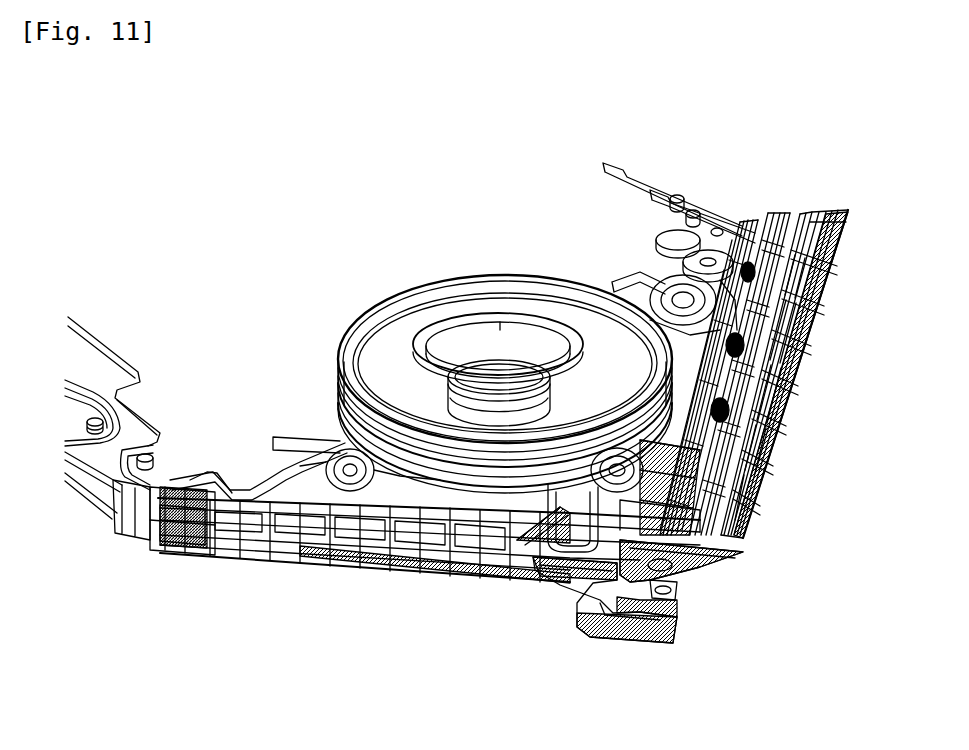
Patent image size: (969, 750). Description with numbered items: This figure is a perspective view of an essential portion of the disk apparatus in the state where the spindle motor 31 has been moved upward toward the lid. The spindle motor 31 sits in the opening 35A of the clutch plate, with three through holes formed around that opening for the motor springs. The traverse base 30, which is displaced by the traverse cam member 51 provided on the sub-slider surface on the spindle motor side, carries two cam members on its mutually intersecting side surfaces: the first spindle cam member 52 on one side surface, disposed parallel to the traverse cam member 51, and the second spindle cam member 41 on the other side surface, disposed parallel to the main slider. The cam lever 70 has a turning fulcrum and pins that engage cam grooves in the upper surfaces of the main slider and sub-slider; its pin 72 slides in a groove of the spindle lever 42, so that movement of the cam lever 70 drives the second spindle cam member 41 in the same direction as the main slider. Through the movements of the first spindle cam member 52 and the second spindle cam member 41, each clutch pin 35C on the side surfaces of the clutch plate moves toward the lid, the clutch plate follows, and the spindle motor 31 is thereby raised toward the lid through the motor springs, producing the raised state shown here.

The traverse base 30 is at (640, 288).
The spindle motor 31 is at (472, 287).
The opening 35A is at (794, 381).
The clutch pin 35C is at (760, 243).
The second spindle cam member 41 is at (317, 553).
The spindle lever 42 is at (652, 643).
The traverse cam member 51 is at (826, 220).
The first spindle cam member 52 is at (778, 220).
The cam lever 70 is at (705, 555).
The pin 72 is at (678, 590).